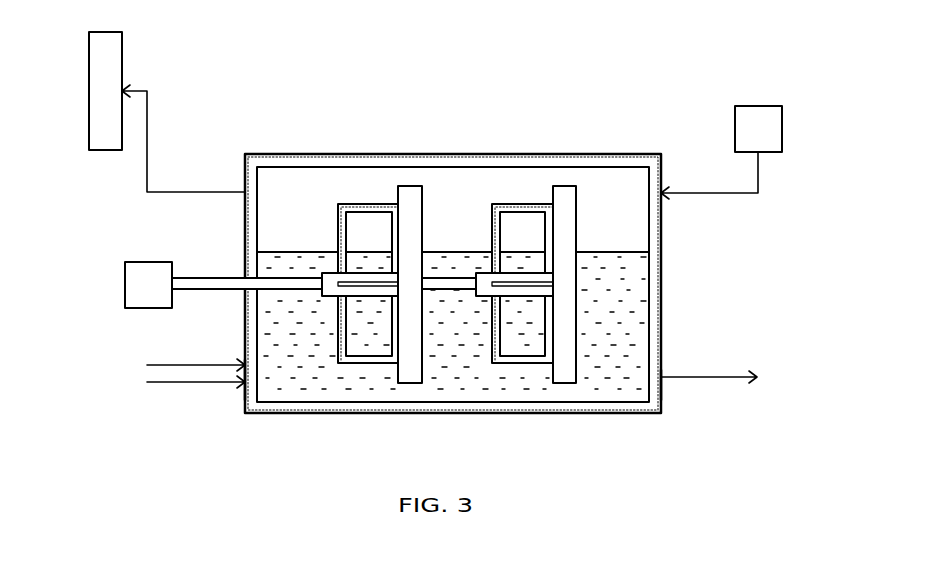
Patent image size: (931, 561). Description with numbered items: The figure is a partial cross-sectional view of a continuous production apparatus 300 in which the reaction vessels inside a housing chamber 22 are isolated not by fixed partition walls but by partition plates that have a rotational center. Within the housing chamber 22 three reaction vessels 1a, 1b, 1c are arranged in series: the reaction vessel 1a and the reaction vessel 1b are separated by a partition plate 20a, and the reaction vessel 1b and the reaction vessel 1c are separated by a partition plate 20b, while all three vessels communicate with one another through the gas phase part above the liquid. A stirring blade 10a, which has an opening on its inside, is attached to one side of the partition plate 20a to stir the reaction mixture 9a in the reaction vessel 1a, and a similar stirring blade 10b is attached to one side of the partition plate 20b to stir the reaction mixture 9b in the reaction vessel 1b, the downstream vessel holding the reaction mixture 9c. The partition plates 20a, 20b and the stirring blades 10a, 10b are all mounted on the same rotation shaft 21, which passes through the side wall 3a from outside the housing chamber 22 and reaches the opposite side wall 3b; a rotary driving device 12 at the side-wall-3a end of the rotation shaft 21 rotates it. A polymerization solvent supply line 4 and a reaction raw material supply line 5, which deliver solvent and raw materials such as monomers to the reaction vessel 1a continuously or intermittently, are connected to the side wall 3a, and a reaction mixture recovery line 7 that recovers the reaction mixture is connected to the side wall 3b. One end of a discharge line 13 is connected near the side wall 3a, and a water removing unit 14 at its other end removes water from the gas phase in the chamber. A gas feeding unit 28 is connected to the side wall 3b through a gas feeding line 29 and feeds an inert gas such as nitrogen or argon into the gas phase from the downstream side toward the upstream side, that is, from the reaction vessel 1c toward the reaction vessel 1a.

The continuous production apparatus 300 is at (620, 73).
The housing chamber 22 is at (668, 141).
The reaction vessel 1a is at (313, 185).
The reaction vessel 1b is at (466, 187).
The reaction vessel 1c is at (612, 187).
The stirring blade 10a is at (368, 207).
The stirring blade 10b is at (523, 207).
The partition plate 20a is at (410, 195).
The partition plate 20b is at (564, 195).
The rotation shaft 21 is at (210, 278).
The rotary driving device 12 is at (150, 262).
The discharge line 13 is at (197, 192).
The water removing unit 14 is at (122, 53).
The gas feeding unit 28 is at (760, 105).
The gas feeding line 29 is at (711, 193).
The polymerization solvent supply line 4 is at (196, 365).
The reaction raw material supply line 5 is at (167, 385).
The side wall 3a is at (245, 393).
The side wall 3b is at (661, 392).
The reaction mixture recovery line 7 is at (712, 377).
The reaction mixture 9a is at (304, 388).
The reaction mixture 9b is at (443, 388).
The reaction mixture 9c is at (604, 385).